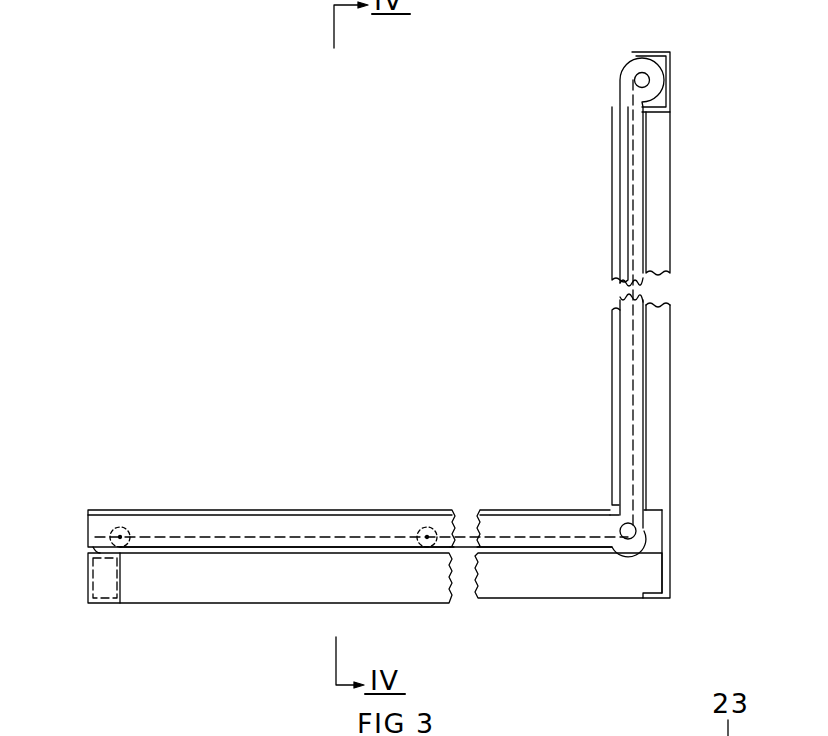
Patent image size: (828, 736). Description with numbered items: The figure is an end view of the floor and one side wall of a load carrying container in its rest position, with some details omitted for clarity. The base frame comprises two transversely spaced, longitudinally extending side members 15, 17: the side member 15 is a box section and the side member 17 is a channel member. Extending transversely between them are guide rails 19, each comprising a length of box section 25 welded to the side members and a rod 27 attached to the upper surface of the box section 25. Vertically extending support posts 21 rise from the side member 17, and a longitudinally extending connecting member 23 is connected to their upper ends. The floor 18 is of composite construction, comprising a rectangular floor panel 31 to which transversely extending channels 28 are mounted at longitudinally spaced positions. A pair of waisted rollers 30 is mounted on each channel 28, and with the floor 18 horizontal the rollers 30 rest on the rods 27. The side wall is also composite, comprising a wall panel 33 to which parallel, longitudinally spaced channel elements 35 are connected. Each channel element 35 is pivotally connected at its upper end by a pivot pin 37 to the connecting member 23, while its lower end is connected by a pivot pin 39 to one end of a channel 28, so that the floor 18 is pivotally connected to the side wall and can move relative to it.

The side member 15 is at (88, 578).
The side member 17 is at (667, 583).
The floor 18 is at (273, 491).
The guide rail 19 is at (202, 610).
The support post 21 is at (658, 228).
The connecting member 23 is at (672, 62).
The box section 25 is at (566, 585).
The rod 27 is at (322, 548).
The channel 28 is at (150, 525).
The waisted roller 30 is at (110, 532).
The floor panel 31 is at (403, 515).
The wall panel 33 is at (618, 155).
The channel element 35 is at (633, 202).
The pivot pin 37 is at (640, 80).
The pivot pin 39 is at (636, 534).